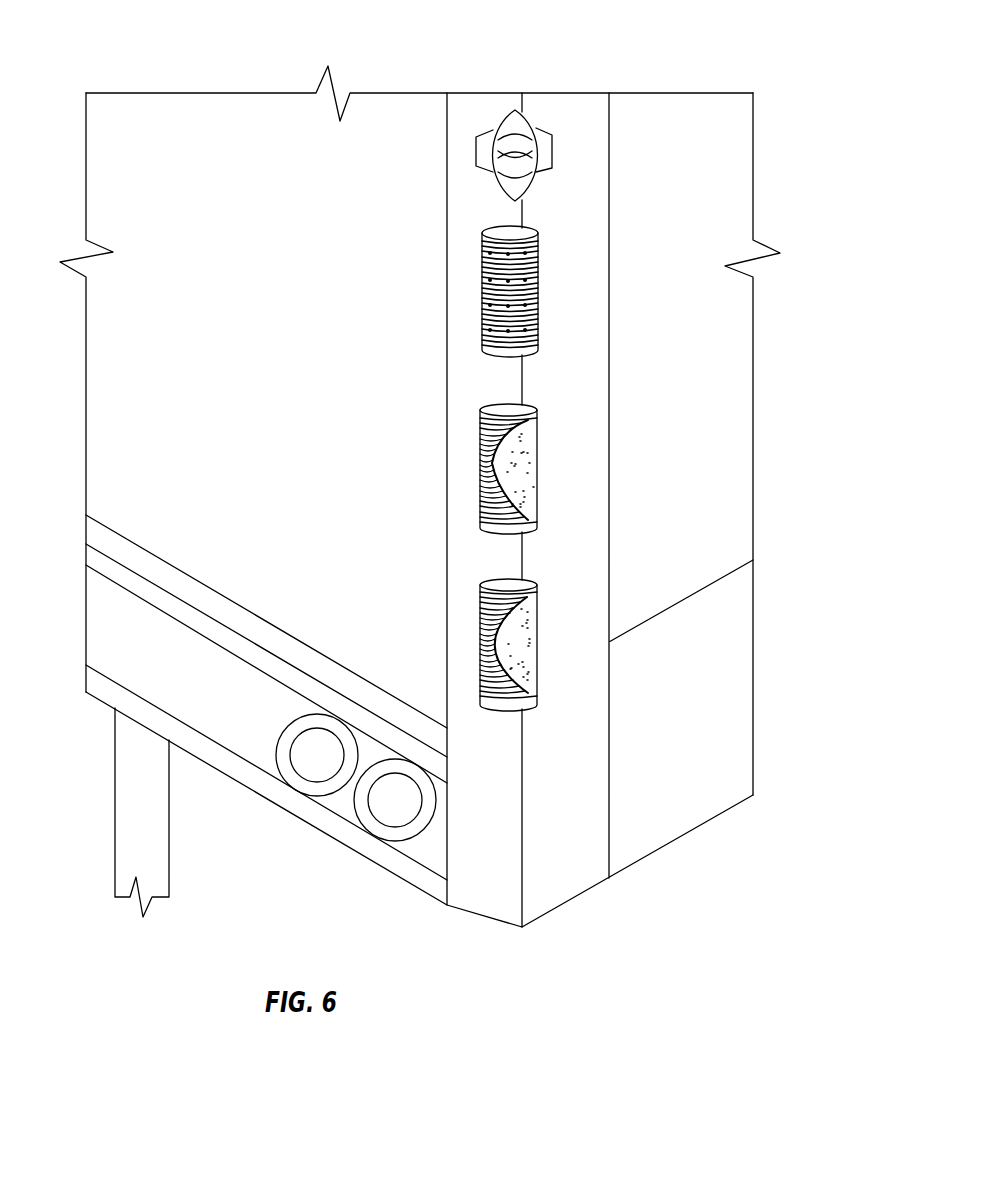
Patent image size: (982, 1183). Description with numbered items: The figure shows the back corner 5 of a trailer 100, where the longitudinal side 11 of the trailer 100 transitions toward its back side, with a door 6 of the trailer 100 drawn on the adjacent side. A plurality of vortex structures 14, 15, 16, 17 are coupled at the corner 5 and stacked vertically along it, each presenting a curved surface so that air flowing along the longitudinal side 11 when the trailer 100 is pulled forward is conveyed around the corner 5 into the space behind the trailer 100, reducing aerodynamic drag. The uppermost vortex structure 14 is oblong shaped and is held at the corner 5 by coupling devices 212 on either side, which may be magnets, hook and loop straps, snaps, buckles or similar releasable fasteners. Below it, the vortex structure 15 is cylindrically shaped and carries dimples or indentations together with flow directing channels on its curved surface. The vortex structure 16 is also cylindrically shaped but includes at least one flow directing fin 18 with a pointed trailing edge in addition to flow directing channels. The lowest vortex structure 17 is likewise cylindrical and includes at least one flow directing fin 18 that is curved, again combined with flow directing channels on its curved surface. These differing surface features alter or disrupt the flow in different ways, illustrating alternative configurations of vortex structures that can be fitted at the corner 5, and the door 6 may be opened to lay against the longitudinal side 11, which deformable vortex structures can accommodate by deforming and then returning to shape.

The trailer 100 is at (781, 36).
The back corner 5 is at (520, 837).
The door 6 is at (220, 492).
The longitudinal side 11 is at (695, 431).
The vortex structure 14 is at (494, 132).
The coupling device 212 is at (484, 164).
The vortex structure 15 is at (412, 386).
The vortex structure 16 is at (480, 458).
The vortex structure 17 is at (480, 620).
The flow directing fin 18 is at (530, 638).